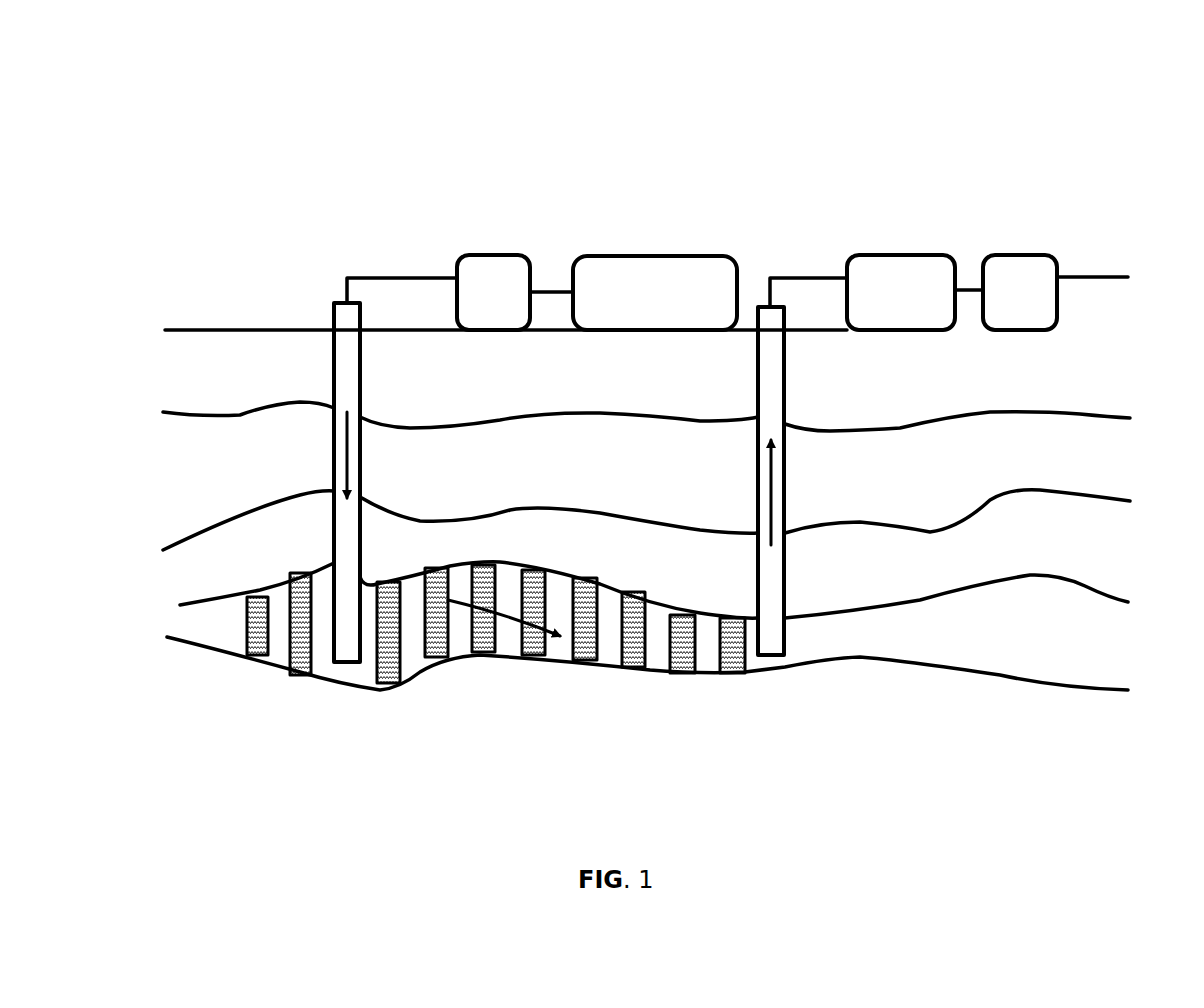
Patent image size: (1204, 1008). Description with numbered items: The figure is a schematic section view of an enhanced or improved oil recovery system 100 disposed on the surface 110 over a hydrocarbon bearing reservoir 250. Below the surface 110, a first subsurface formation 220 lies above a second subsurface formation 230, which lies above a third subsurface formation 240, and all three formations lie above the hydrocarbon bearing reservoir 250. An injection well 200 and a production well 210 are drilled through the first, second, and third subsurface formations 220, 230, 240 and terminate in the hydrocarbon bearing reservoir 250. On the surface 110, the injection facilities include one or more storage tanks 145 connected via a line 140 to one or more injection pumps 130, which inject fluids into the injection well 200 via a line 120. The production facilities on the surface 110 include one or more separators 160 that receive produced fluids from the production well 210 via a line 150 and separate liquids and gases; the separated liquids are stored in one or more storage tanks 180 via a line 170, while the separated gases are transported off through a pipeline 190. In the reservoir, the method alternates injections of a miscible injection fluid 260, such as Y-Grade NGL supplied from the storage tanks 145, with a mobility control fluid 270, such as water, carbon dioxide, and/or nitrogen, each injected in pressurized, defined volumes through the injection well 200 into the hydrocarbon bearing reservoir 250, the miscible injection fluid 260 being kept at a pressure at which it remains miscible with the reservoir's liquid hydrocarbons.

The enhanced or improved oil recovery system 100 is at (580, 100).
The surface 110 is at (178, 330).
The line 120 is at (348, 278).
The injection pump 130 is at (485, 255).
The line 140 is at (548, 292).
The storage tank 145 is at (665, 256).
The line 150 is at (795, 278).
The separator 160 is at (900, 255).
The line 170 is at (970, 290).
The storage tank 180 is at (1040, 255).
The pipeline 190 is at (1075, 276).
The injection well 200 is at (360, 393).
The production well 210 is at (785, 397).
The first subsurface formation 220 is at (1010, 392).
The second subsurface formation 230 is at (948, 497).
The third subsurface formation 240 is at (880, 582).
The hydrocarbon bearing reservoir 250 is at (1058, 642).
The miscible injection fluid 260 is at (400, 573).
The mobility control fluid 270 is at (508, 573).